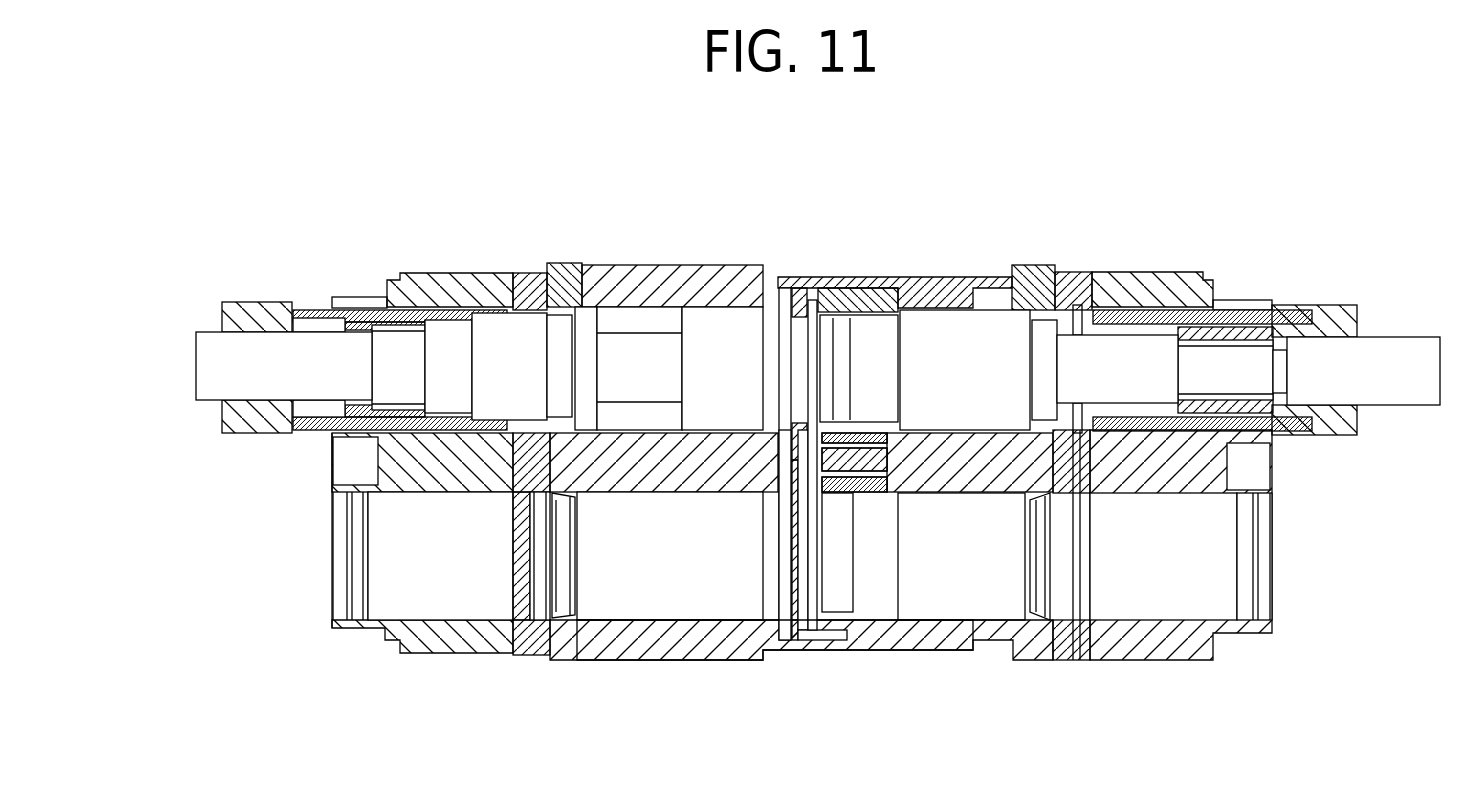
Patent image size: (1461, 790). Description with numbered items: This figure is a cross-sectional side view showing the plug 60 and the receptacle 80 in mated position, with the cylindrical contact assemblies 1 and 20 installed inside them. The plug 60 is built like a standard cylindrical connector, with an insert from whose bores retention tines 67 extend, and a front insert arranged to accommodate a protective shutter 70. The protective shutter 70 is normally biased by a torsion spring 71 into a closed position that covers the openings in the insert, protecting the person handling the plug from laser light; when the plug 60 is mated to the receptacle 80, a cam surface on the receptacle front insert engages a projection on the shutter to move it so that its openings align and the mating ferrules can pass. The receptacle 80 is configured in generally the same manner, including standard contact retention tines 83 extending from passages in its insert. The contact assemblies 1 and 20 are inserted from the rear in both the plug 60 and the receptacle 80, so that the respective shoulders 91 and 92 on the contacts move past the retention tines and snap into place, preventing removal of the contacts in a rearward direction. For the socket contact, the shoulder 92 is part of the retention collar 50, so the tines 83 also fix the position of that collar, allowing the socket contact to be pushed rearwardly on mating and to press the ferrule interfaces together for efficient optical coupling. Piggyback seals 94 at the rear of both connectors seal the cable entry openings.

The cylindrical contact assembly 1 is at (934, 337).
The cylindrical contact assembly 20 is at (721, 335).
The retention collar 50 is at (588, 350).
The plug 60 is at (1149, 638).
The retention tines 67 is at (1040, 622).
The protective shutter 70 is at (817, 584).
The torsion spring 71 is at (858, 487).
The receptacle 80 is at (654, 638).
The contact retention tines 83 is at (563, 620).
The shoulder 91 is at (585, 320).
The shoulder 92 is at (1033, 366).
The piggyback seals 94 is at (280, 318).